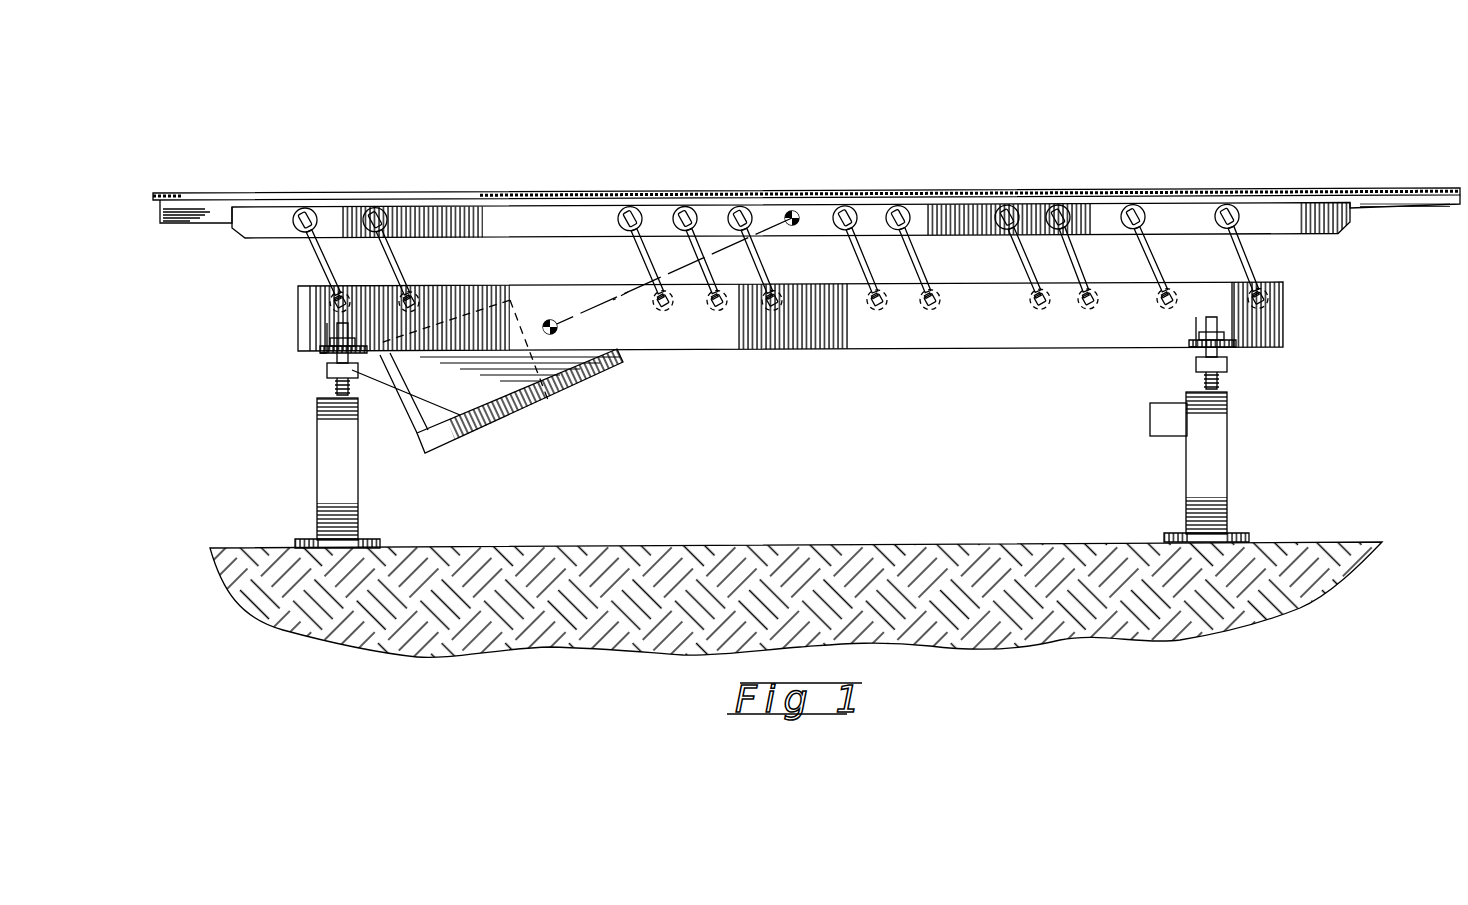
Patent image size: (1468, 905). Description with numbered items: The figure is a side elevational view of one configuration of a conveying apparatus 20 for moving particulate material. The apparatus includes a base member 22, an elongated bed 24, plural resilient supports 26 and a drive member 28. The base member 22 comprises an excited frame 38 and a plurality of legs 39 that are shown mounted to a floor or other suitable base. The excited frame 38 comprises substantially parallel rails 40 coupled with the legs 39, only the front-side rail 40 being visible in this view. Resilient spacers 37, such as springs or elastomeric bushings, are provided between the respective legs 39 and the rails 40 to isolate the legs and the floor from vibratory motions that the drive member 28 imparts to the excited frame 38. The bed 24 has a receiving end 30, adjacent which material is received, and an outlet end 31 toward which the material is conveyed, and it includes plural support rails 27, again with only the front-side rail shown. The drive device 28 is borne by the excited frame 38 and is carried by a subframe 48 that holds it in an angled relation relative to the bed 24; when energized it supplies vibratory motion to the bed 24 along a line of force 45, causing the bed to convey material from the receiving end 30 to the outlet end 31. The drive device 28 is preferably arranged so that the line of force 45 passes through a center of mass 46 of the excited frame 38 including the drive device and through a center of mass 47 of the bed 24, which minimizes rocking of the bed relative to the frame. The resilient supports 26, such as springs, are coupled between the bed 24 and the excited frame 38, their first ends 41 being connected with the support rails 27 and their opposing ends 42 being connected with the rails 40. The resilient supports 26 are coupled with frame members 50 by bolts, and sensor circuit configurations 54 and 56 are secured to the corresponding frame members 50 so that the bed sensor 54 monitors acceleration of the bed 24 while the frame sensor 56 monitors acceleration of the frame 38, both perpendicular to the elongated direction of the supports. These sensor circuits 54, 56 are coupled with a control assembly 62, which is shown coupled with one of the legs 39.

The conveying apparatus 20 is at (1036, 53).
The base member 22 is at (746, 335).
The bed 24 is at (289, 194).
The resilient supports 26 is at (782, 243).
The support rails 27 is at (526, 222).
The drive member 28 is at (487, 413).
The receiving end 30 is at (184, 192).
The outlet end 31 is at (1458, 186).
The resilient spacers 37 is at (316, 382).
The excited frame 38 is at (916, 348).
The legs 39 is at (333, 472).
The rails 40 is at (790, 335).
The first ends 41 is at (1040, 214).
The opposing ends 42 is at (1078, 322).
The line of force 45 is at (586, 309).
The center of mass of excited frame 46 is at (550, 322).
The center of mass of elongated bed 47 is at (797, 212).
The subframe 48 is at (545, 398).
The frame members 50 is at (1067, 207).
The bed sensor circuit 54 is at (1013, 207).
The frame sensor circuit 56 is at (1047, 314).
The control assembly 62 is at (1158, 420).